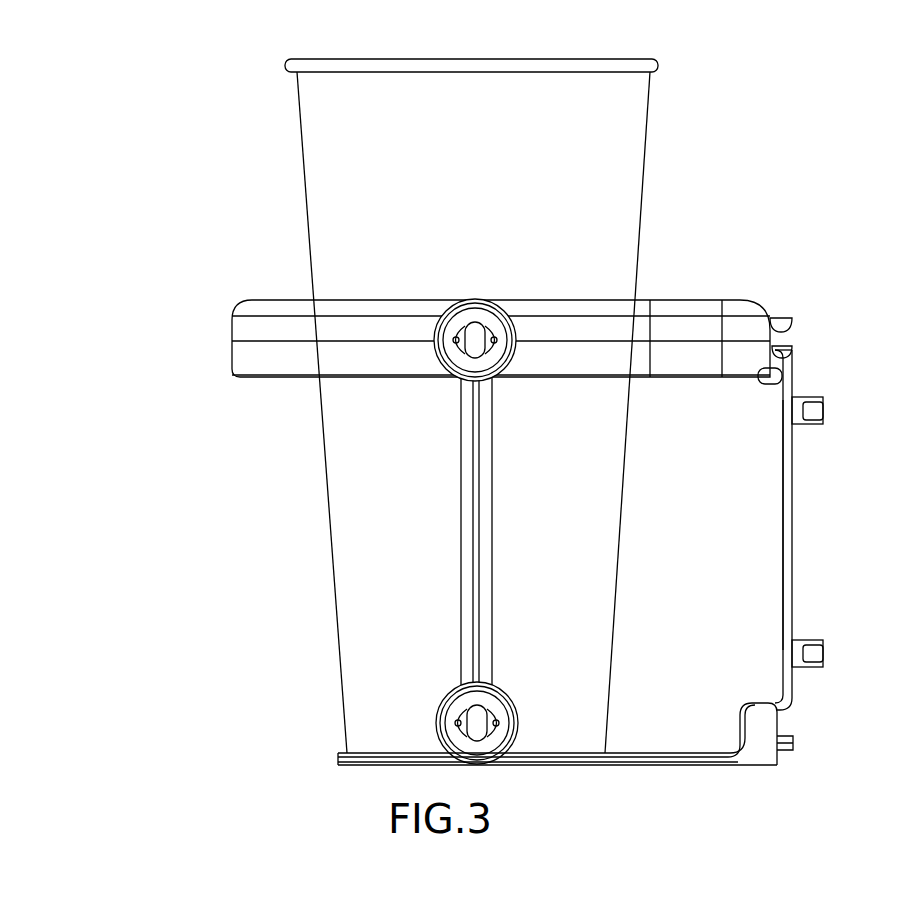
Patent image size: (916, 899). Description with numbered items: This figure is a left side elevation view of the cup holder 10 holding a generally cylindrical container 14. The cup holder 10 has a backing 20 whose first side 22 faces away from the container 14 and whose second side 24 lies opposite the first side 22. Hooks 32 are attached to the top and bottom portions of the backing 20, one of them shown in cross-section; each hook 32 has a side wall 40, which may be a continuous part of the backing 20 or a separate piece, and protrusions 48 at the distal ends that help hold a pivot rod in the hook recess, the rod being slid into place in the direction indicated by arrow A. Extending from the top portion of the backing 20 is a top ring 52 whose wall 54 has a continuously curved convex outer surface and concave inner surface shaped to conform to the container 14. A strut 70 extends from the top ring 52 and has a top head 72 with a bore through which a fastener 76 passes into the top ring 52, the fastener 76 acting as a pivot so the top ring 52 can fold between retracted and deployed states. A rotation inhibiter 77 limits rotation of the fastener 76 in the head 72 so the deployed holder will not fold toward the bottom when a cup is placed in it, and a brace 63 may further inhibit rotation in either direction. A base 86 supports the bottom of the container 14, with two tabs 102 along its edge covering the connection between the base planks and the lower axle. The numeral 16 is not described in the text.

The cup holder 10 is at (125, 400).
The container 14 is at (645, 155).
The cup holder 16 is at (215, 603).
The backing 20 is at (786, 272).
The first side 22 is at (792, 530).
The second side 24 is at (783, 604).
The hooks 32 is at (772, 316).
The side wall 40 is at (854, 532).
The protrusions 48 is at (793, 346).
The top ring 52 is at (278, 380).
The wall 54 is at (612, 357).
The brace 63 is at (766, 384).
The strut 70 is at (497, 559).
The top head 72 is at (503, 308).
The fastener 76 is at (478, 358).
The rotation inhibiter 77 is at (445, 358).
The base 86 is at (405, 753).
The tabs 102 is at (758, 753).